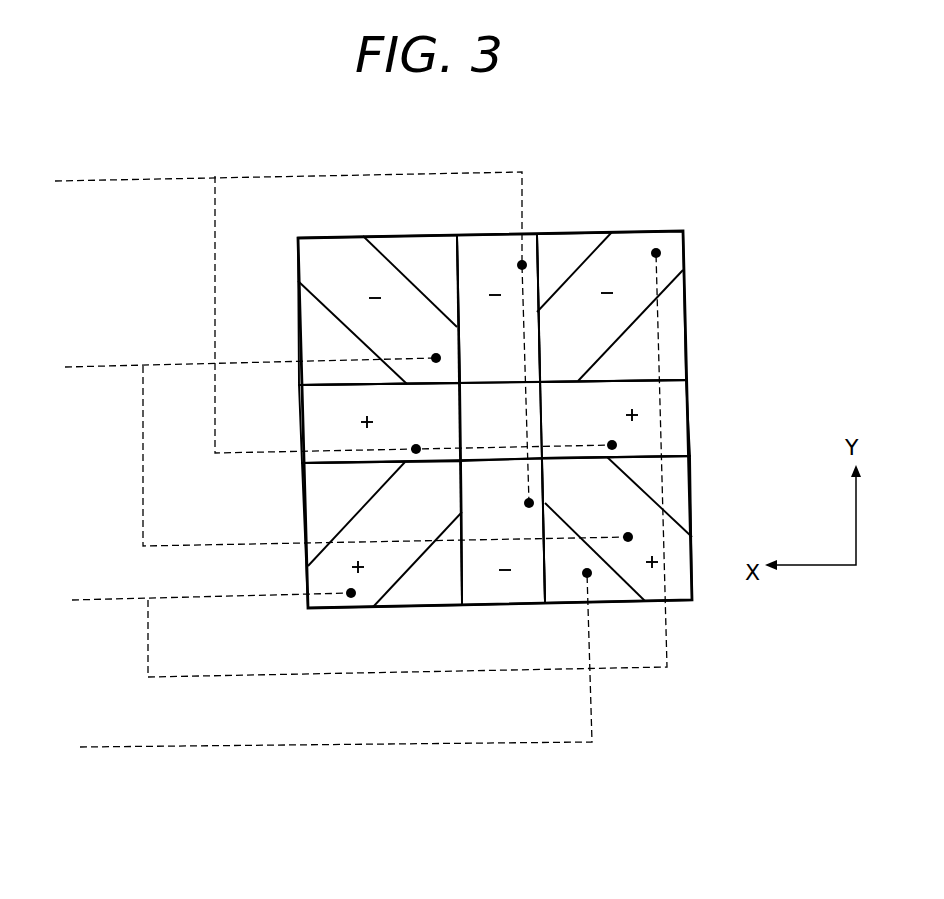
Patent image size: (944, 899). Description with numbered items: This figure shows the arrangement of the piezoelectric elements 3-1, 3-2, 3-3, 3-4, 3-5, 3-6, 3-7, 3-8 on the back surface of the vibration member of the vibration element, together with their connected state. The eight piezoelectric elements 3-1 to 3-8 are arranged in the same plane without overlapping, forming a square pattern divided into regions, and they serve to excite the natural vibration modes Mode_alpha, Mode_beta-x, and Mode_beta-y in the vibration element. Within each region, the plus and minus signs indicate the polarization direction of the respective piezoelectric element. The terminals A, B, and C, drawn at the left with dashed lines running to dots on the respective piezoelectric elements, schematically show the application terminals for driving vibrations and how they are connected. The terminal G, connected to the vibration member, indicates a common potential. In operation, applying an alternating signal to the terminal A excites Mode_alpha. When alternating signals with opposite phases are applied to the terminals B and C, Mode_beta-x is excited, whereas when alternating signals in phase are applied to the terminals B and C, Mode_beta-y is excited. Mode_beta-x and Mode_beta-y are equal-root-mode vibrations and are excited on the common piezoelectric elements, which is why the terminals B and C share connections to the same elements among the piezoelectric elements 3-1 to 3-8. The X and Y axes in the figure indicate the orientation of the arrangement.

The piezoelectric element 3-1 is at (359, 423).
The piezoelectric element 3-2 is at (515, 290).
The piezoelectric element 3-3 is at (640, 419).
The piezoelectric element 3-4 is at (503, 550).
The piezoelectric element 3-5 is at (354, 301).
The piezoelectric element 3-6 is at (622, 290).
The piezoelectric element 3-7 is at (637, 544).
The piezoelectric element 3-8 is at (368, 551).
The terminal A is at (322, 336).
The terminal B is at (332, 452).
The terminal C is at (357, 465).
The common potential G is at (323, 667).